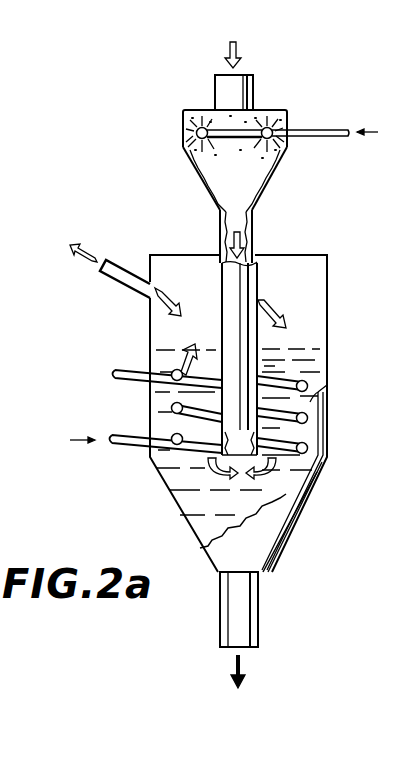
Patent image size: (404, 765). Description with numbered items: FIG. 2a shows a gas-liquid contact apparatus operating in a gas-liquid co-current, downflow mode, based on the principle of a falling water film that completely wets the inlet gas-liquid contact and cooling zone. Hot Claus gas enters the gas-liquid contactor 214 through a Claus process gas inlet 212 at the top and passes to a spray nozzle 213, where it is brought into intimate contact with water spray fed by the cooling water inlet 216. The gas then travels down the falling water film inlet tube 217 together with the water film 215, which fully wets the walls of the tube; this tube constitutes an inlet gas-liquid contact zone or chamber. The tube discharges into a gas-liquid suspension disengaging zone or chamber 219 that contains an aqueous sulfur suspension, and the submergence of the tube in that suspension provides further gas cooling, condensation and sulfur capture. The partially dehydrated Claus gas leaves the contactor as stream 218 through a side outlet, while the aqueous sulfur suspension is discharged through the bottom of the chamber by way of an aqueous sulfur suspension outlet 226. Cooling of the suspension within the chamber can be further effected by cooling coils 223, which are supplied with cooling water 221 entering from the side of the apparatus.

The Claus process gas inlet 212 is at (253, 92).
The spray nozzle 213 is at (183, 122).
The gas-liquid contactor 214 is at (328, 290).
The water film 215 is at (253, 220).
The cooling water inlet 216 is at (333, 137).
The falling water film inlet tube 217 is at (257, 288).
The partially dehydrated Claus gas stream 218 is at (127, 264).
The gas-liquid suspension disengaging zone or chamber 219 is at (316, 364).
The cooling water 221 is at (122, 446).
The cooling coils 223 is at (308, 385).
The aqueous sulfur suspension outlet 226 is at (260, 620).